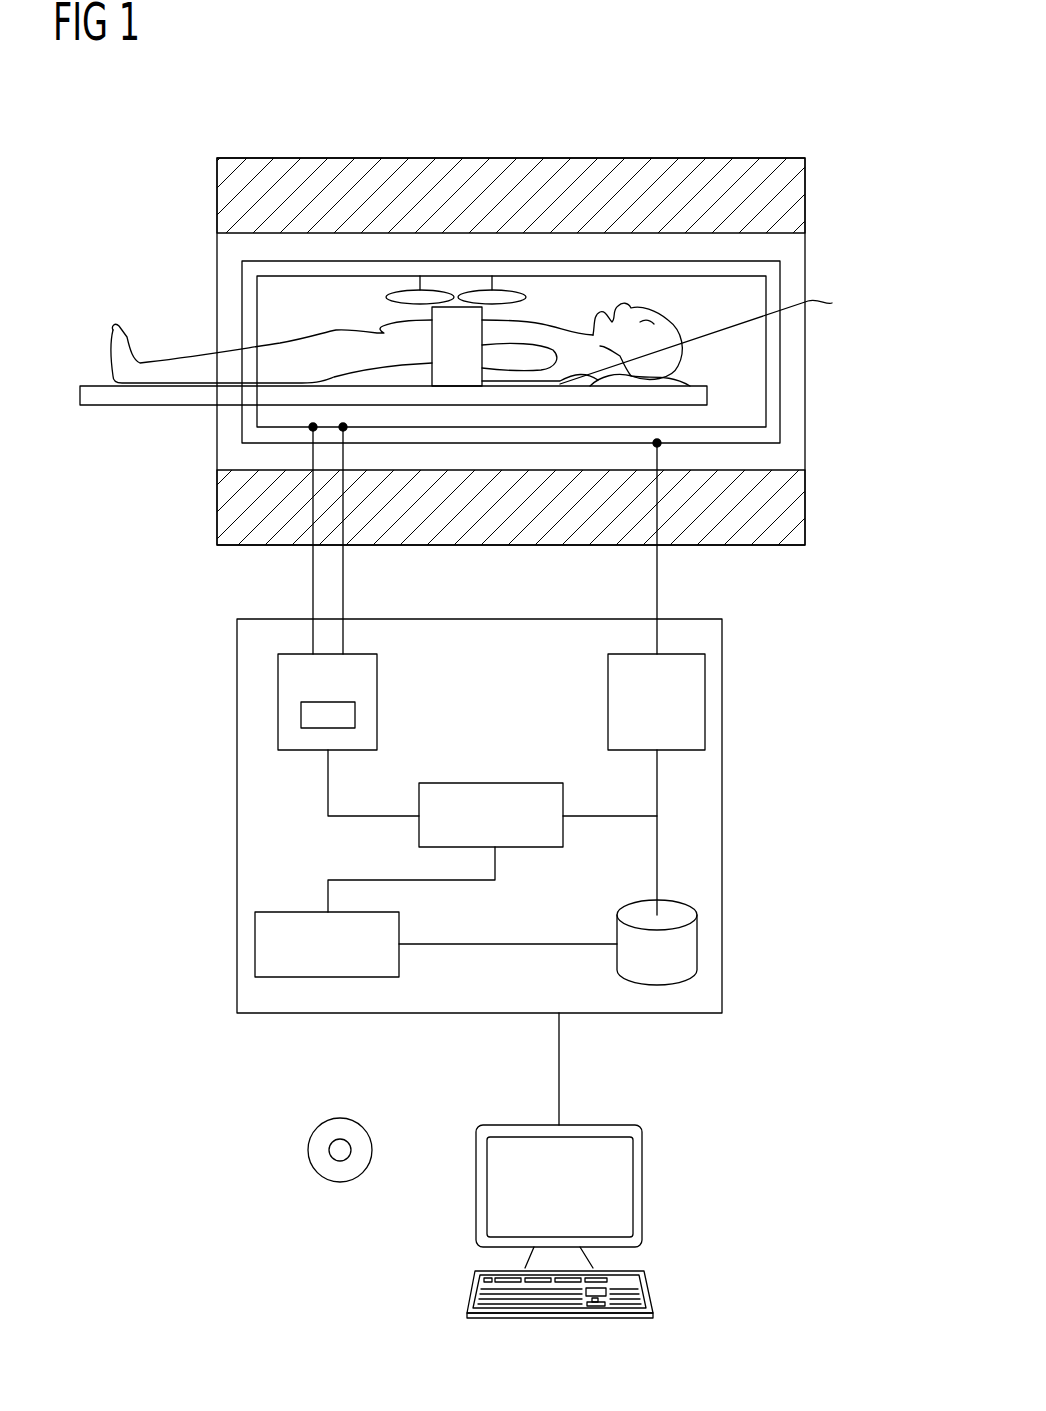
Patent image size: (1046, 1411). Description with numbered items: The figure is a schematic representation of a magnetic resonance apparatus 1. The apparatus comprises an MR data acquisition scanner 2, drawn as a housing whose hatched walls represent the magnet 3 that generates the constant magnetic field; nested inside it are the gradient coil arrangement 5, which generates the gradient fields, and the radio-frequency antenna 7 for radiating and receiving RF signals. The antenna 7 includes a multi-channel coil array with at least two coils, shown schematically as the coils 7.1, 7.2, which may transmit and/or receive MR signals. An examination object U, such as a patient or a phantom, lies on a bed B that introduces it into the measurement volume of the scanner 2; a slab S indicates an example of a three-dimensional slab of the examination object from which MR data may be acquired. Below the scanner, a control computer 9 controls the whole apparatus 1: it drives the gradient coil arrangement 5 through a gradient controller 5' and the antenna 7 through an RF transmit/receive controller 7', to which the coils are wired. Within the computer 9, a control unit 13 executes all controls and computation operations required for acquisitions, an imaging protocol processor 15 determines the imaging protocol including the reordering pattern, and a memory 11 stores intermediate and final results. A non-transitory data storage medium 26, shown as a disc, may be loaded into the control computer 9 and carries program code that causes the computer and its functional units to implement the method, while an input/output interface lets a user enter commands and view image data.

The magnetic resonance apparatus 1 is at (706, 124).
The MR data acquisition scanner 2 is at (806, 189).
The magnet 3 is at (590, 157).
The gradient coil arrangement 5 is at (547, 352).
The radio-frequency antenna 7 is at (554, 351).
The coil 7.1 is at (403, 290).
The coil 7.2 is at (510, 290).
The gradient controller 5' is at (696, 702).
The RF transmit/receive controller 7' is at (284, 702).
The control computer 9 is at (722, 810).
The memory 11 is at (697, 945).
The control unit 13 is at (503, 782).
The imaging protocol processor 15 is at (255, 945).
The non-transitory data storage medium 26 is at (308, 1152).
The slab S is at (707, 335).
The examination object U is at (114, 328).
The bed B is at (142, 396).